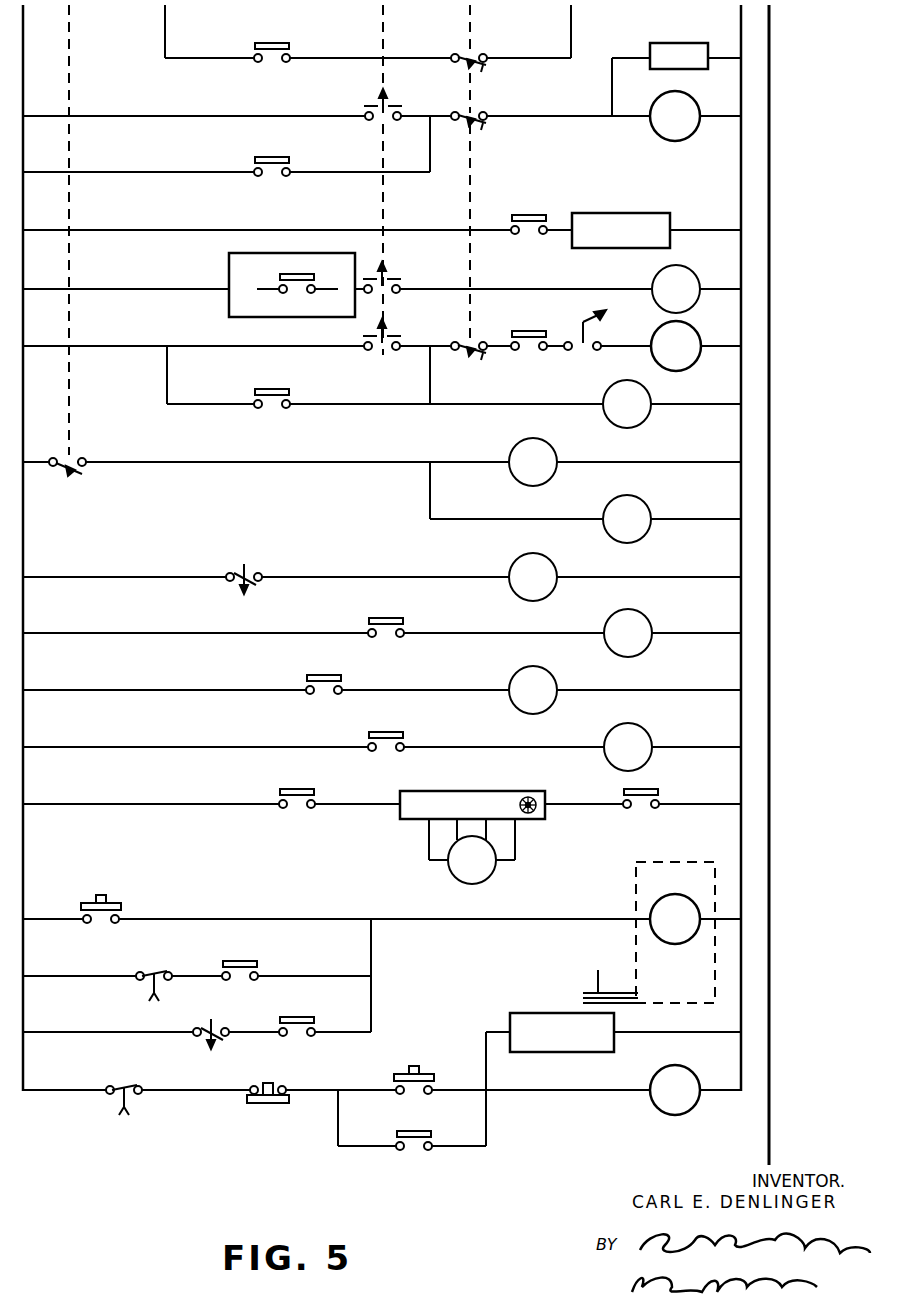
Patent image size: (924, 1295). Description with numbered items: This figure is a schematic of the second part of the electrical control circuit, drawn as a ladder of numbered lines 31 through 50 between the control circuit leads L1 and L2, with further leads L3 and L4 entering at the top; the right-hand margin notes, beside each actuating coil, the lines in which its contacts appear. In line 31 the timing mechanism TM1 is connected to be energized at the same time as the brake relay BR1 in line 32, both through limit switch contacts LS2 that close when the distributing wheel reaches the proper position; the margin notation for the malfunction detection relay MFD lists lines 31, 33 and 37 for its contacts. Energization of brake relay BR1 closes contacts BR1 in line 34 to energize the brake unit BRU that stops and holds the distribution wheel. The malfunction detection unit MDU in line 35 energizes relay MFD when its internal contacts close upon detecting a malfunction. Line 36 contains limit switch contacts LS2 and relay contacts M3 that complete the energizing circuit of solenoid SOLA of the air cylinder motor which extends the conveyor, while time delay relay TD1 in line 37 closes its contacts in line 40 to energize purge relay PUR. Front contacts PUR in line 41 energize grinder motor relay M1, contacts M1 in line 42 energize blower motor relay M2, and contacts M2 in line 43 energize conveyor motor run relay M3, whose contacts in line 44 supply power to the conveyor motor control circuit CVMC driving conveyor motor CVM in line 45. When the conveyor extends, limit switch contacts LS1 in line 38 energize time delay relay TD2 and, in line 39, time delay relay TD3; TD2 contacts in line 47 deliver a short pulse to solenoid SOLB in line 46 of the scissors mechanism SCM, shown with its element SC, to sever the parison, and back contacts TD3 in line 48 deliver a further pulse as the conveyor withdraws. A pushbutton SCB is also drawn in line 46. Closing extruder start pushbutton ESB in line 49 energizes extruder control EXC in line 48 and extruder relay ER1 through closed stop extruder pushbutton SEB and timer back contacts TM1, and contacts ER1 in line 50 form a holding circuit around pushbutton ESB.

The line 31 is at (769, 58).
The line 32 is at (769, 116).
The line 33 is at (769, 172).
The line 34 is at (769, 230).
The line 35 is at (769, 289).
The line 36 is at (769, 346).
The line 37 is at (769, 404).
The line 38 is at (769, 462).
The line 39 is at (769, 519).
The line 40 is at (769, 577).
The line 41 is at (769, 633).
The line 42 is at (769, 690).
The line 43 is at (769, 747).
The line 44 is at (769, 804).
The line 45 is at (769, 861).
The line 46 is at (769, 919).
The line 47 is at (769, 976).
The line 48 is at (769, 1032).
The line 49 is at (769, 1090).
The line 50 is at (769, 1146).
The control circuit lead L1 is at (23, 12).
The control circuit lead L2 is at (737, 23).
The power line L3 is at (163, 30).
The power line L4 is at (573, 22).
The limit switch mechanism LS1 is at (82, 474).
The limit switch mechanism LS2 is at (484, 52).
The malfunction detection relay MFD is at (476, 216).
The timing mechanism TM1 is at (406, 579).
The brake relay BR1 is at (605, 162).
The brake unit BRU is at (650, 213).
The malfunction detection unit MDU is at (232, 258).
The conveyor motor run relay M3 is at (469, 560).
The solenoid SOLA is at (627, 340).
The time delay relay TD1 is at (438, 487).
The time delay relay TD2 is at (346, 719).
The time delay relay TD3 is at (422, 772).
The purge relay PUR is at (462, 595).
The grinder motor relay M1 is at (479, 651).
The blower motor relay M2 is at (462, 708).
The conveyor motor control circuit CVMC is at (510, 791).
The conveyor motor CVM is at (472, 851).
The start cycle button SCB is at (108, 897).
The solenoid SOLB is at (675, 919).
The scissors mechanism SCM is at (636, 955).
The switch contact SC is at (598, 970).
The extruder control EXC is at (520, 1013).
The extruder start pushbutton ESB is at (424, 1070).
The stop extruder pushbutton SEB is at (274, 1083).
The extruder relay ER1 is at (548, 1107).